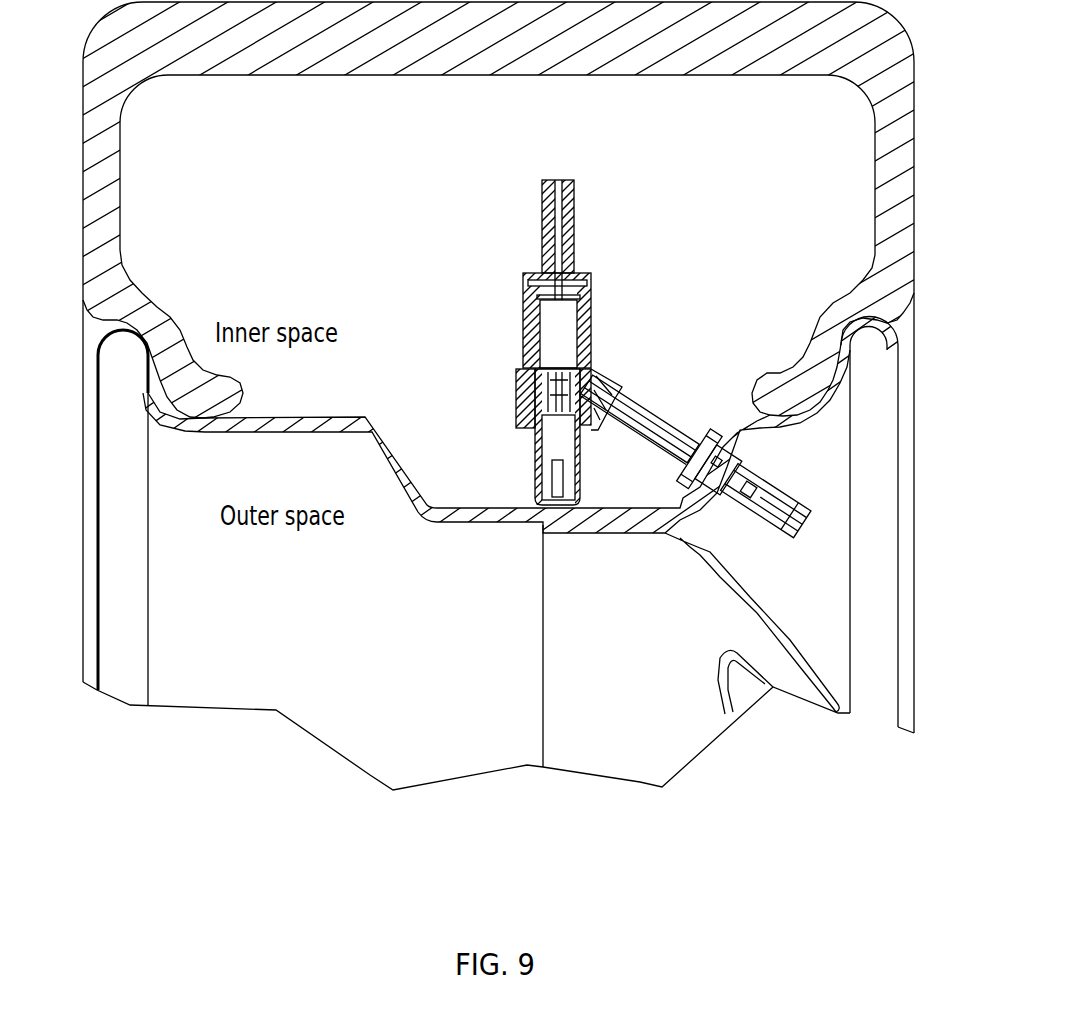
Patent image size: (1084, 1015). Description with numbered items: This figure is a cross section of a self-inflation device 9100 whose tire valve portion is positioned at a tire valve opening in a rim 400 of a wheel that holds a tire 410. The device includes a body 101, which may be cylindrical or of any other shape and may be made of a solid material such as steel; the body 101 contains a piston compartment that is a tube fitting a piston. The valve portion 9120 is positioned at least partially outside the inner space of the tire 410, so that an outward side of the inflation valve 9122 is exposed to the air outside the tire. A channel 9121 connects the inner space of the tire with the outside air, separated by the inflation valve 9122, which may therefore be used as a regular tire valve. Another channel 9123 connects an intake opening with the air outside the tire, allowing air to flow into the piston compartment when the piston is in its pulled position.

The tire 410 is at (156, 94).
The rim 400 is at (374, 408).
The self-inflation device 9100 is at (526, 347).
The body 101 is at (602, 275).
The valve portion 9120 is at (662, 407).
The channel 9121 is at (723, 490).
The inflation valve 9122 is at (770, 525).
The channel 9123 is at (640, 438).